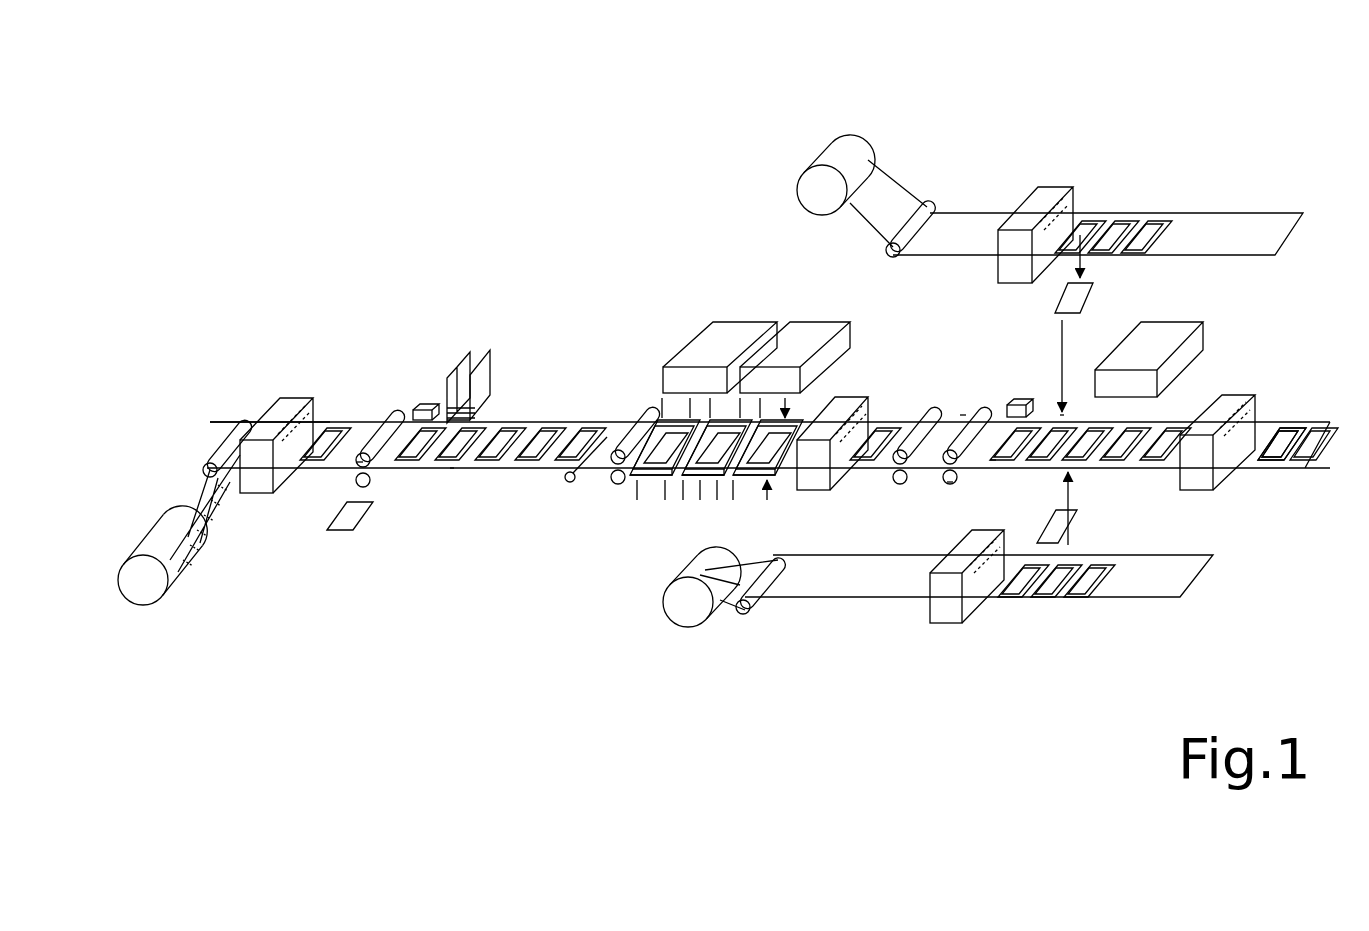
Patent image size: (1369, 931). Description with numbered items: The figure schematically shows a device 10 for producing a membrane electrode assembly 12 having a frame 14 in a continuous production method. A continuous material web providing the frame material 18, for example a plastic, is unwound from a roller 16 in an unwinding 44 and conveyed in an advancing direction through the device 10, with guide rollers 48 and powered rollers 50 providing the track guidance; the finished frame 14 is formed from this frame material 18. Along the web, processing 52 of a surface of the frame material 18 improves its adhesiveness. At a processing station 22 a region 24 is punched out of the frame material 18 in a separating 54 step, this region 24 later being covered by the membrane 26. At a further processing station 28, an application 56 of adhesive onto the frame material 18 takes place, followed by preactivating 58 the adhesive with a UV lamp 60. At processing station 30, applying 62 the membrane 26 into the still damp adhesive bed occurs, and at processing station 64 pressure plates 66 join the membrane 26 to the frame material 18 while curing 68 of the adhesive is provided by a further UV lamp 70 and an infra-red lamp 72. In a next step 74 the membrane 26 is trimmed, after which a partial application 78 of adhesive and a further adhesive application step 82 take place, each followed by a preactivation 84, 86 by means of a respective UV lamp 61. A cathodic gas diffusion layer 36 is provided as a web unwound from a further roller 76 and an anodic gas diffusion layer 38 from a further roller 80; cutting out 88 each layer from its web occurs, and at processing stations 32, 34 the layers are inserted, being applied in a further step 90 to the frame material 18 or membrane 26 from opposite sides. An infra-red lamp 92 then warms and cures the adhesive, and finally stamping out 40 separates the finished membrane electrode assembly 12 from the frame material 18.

The device 10 is at (305, 178).
The membrane electrode assembly 12 is at (1297, 410).
The frame 14 is at (1327, 432).
The roller 16 is at (153, 595).
The frame material 18 is at (305, 470).
The processing station 22 is at (298, 393).
The region 24 is at (339, 435).
The membrane 26 is at (487, 423).
The processing station 28 is at (396, 410).
The processing station 30 is at (475, 360).
The processing station 32 is at (1058, 335).
The processing station 34 is at (1068, 470).
The cathodic gas diffusion layer 36 is at (1077, 295).
The anodic gas diffusion layer 38 is at (1070, 517).
The stamping out 40 is at (1253, 385).
The unwinding 44 is at (150, 520).
The guide rollers 48 is at (210, 462).
The powered rollers 50 is at (647, 417).
The processing 52 is at (185, 497).
The separating 54 is at (343, 418).
The application 56 is at (387, 473).
The preactivating 58 is at (441, 375).
The UV lamp 60 is at (430, 405).
The UV lamp 61 is at (1023, 397).
The applying 62 is at (453, 477).
The processing station 64 is at (653, 367).
The pressure plates 66 is at (632, 480).
The curing 68 is at (712, 477).
The UV lamp 70 is at (720, 330).
The infra-red lamp 72 is at (832, 337).
The step 74 is at (877, 393).
The roller 76 is at (822, 190).
The application 78 is at (965, 410).
The roller 80 is at (687, 605).
The step 82 is at (957, 487).
The preactivation 84 is at (998, 410).
The preactivation 86 is at (997, 467).
The cutting out 88 is at (1077, 202).
The step 90 is at (1053, 398).
The infra-red lamp 92 is at (1207, 328).